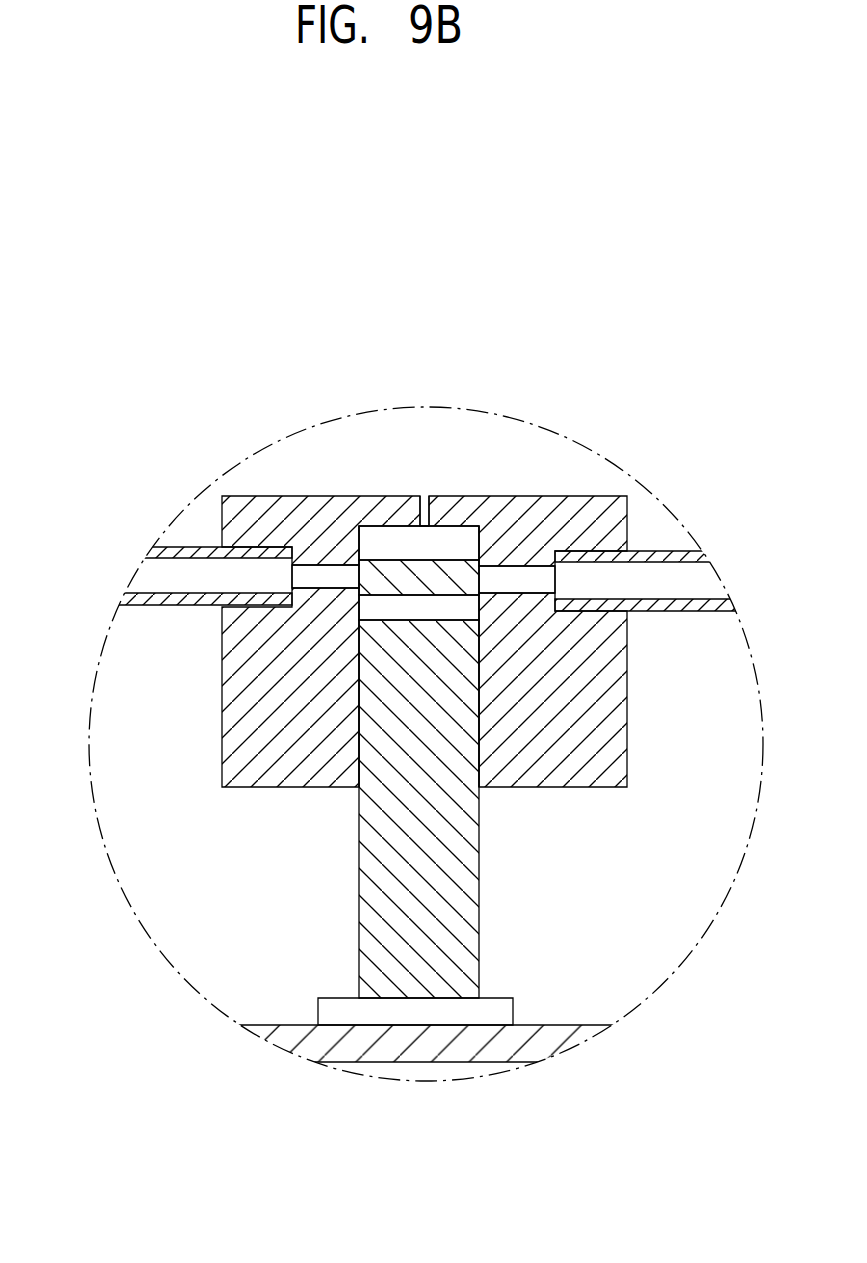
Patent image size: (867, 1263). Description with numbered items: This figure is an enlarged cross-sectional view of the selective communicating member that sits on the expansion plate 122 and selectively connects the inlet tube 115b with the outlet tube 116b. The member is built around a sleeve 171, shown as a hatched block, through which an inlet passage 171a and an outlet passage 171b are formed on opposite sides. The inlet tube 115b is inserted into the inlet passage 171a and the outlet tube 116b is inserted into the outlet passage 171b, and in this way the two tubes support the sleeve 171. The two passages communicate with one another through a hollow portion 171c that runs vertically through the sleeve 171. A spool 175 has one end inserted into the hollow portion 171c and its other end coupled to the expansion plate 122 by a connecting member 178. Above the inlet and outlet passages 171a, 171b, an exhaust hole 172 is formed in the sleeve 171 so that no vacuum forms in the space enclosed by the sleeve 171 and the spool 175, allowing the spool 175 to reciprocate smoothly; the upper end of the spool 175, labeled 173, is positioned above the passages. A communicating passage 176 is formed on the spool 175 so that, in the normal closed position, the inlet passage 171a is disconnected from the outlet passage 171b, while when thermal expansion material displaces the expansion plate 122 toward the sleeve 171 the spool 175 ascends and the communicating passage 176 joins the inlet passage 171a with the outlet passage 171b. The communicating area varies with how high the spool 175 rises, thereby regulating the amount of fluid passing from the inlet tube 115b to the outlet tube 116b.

The sleeve 171 is at (257, 747).
The inlet passage 171a is at (337, 576).
The outlet passage 171b is at (544, 576).
The hollow portion 171c is at (356, 752).
The exhaust hole 172 is at (428, 514).
The upper stem section 173 is at (407, 541).
The spool 175 is at (453, 892).
The communicating passage 176 is at (464, 618).
The connecting member 178 is at (487, 1010).
The expansion plate 122 is at (290, 1035).
The inlet tube 115b is at (193, 552).
The outlet tube 116b is at (685, 611).